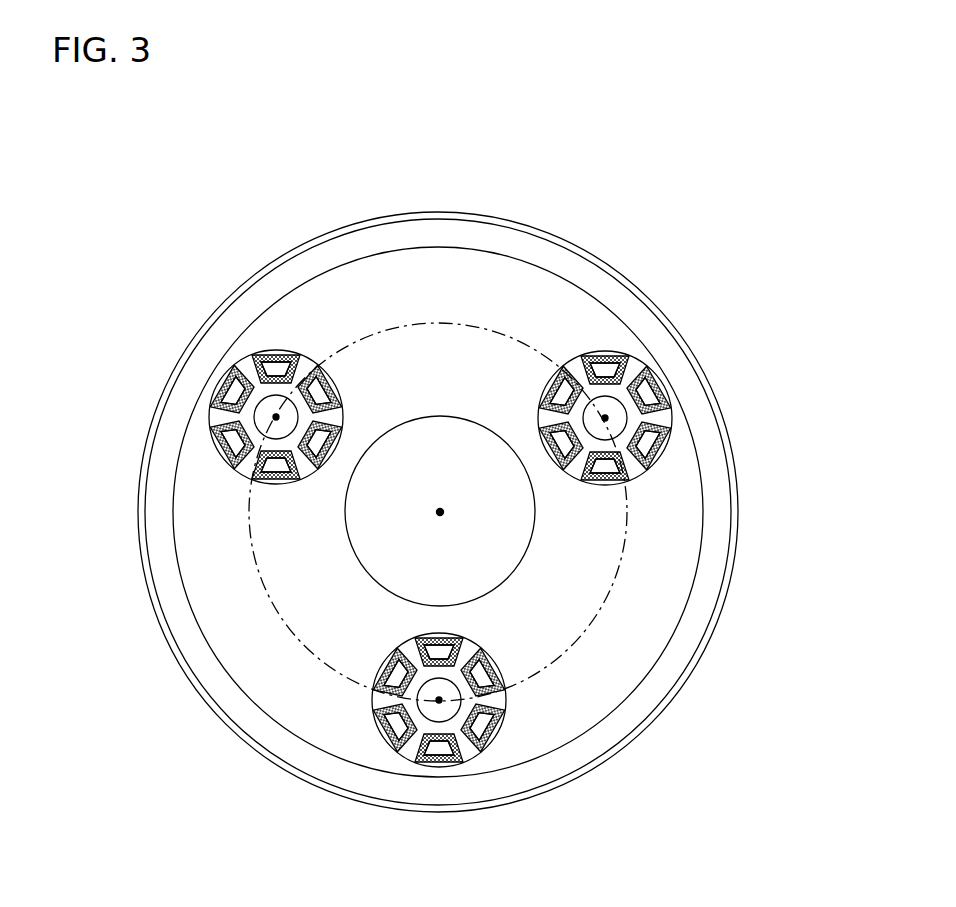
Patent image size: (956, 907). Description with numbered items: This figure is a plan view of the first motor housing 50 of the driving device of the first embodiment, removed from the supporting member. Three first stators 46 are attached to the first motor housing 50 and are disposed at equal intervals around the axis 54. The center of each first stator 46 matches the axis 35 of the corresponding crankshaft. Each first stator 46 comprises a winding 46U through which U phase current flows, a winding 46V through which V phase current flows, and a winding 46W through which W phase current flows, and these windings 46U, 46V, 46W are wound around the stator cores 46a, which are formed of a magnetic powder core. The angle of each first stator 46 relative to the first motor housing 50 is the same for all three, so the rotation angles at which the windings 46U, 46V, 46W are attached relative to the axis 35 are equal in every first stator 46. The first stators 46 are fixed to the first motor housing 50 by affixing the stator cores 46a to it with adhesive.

The axis of the crankshaft 35 is at (276, 417).
The first stator 46 is at (225, 475).
The stator core 46a is at (271, 372).
The winding 46U is at (334, 378).
The winding 46V is at (328, 455).
The winding 46W is at (216, 448).
The first motor housing 50 is at (693, 545).
The axis 54 is at (440, 512).